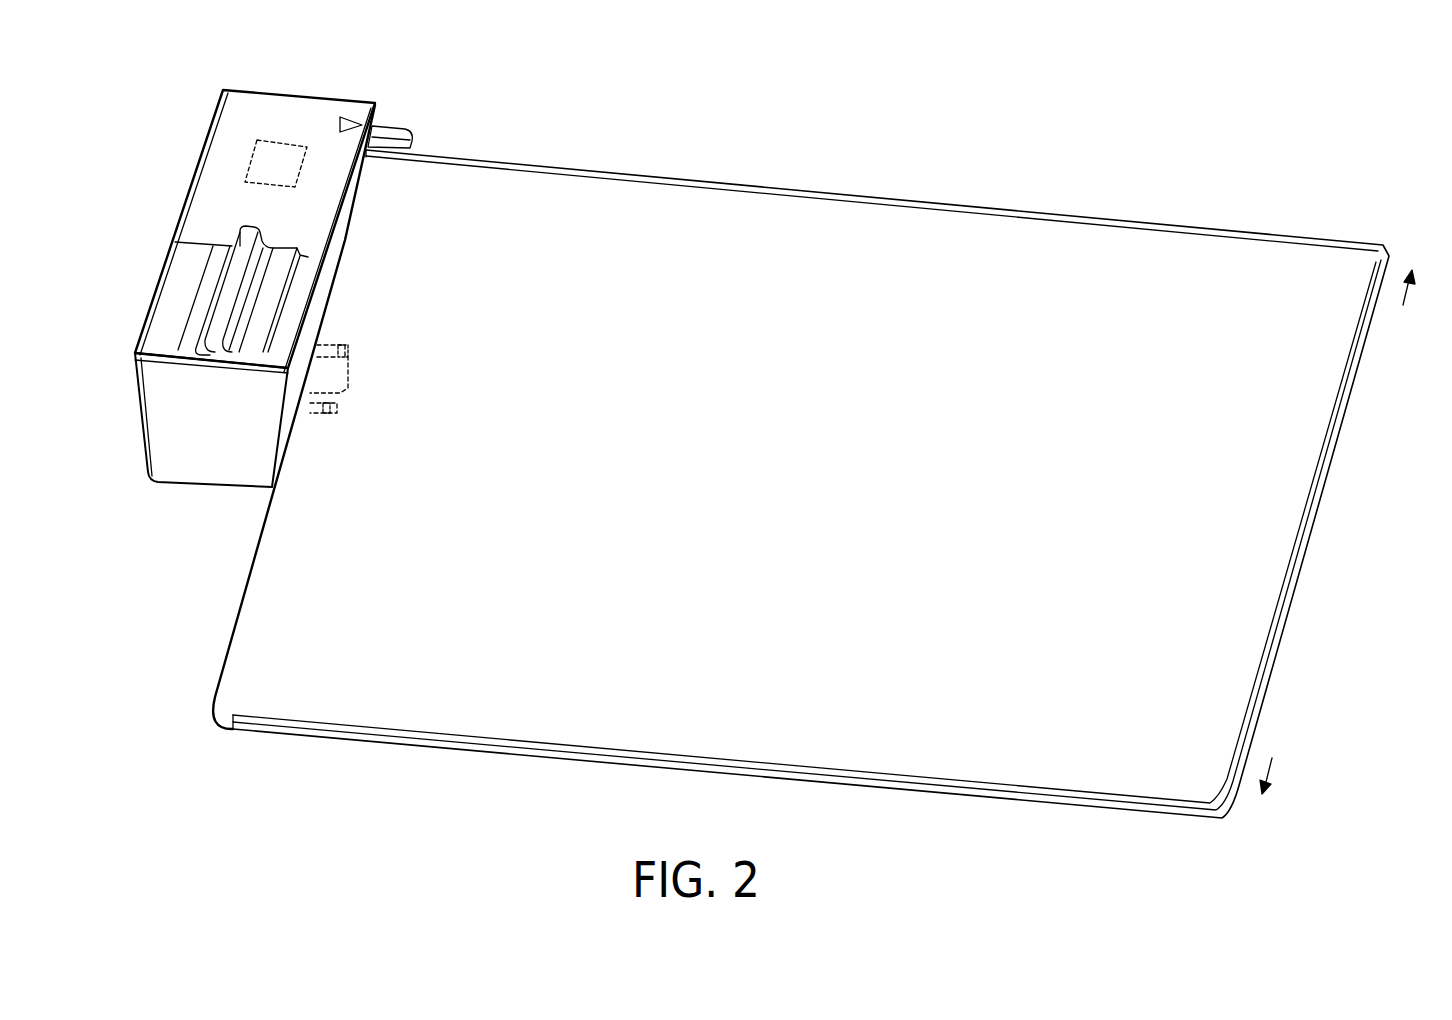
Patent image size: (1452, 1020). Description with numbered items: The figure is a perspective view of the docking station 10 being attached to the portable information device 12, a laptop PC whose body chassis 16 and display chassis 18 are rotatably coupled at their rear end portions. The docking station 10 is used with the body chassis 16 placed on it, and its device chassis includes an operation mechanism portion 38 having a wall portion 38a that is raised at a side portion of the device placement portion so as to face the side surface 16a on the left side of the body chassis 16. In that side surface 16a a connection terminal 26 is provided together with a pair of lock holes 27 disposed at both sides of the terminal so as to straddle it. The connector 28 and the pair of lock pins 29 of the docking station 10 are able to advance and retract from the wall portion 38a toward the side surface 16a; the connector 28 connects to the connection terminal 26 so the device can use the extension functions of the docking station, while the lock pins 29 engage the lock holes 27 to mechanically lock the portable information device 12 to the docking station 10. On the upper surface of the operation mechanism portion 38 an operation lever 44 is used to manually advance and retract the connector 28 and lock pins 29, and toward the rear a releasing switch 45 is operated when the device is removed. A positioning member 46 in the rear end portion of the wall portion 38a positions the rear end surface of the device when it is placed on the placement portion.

The docking station 10 is at (151, 58).
The portable information device 12 is at (858, 236).
The body chassis 16 is at (1303, 533).
The side surface 16a is at (250, 555).
The display chassis 18 is at (1305, 398).
The connection terminal 26 is at (380, 379).
The lock hole 27 is at (392, 382).
The connector 28 is at (358, 380).
The lock pin 29 is at (357, 352).
The operation mechanism portion 38 is at (173, 440).
The wall portion 38a is at (322, 290).
The operation lever 44 is at (228, 296).
The releasing switch 45 is at (273, 172).
The positioning member 46 is at (393, 127).